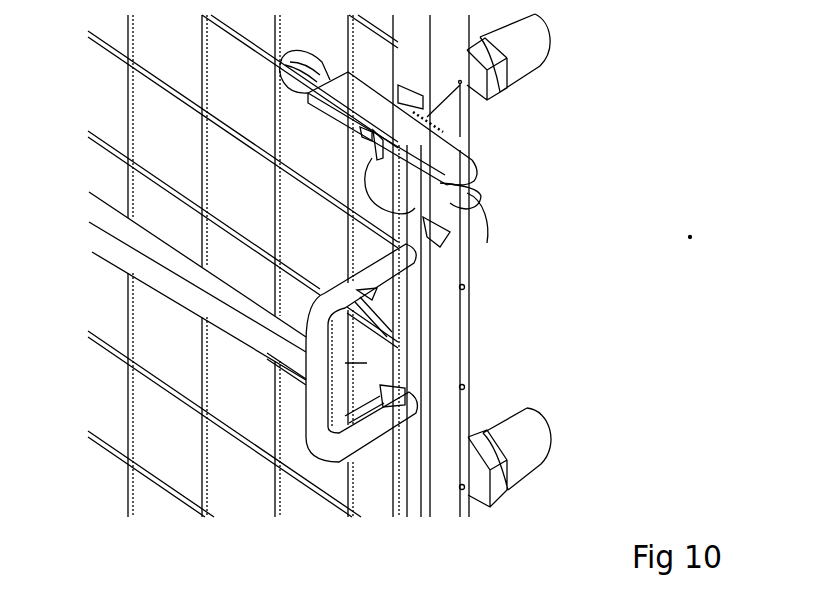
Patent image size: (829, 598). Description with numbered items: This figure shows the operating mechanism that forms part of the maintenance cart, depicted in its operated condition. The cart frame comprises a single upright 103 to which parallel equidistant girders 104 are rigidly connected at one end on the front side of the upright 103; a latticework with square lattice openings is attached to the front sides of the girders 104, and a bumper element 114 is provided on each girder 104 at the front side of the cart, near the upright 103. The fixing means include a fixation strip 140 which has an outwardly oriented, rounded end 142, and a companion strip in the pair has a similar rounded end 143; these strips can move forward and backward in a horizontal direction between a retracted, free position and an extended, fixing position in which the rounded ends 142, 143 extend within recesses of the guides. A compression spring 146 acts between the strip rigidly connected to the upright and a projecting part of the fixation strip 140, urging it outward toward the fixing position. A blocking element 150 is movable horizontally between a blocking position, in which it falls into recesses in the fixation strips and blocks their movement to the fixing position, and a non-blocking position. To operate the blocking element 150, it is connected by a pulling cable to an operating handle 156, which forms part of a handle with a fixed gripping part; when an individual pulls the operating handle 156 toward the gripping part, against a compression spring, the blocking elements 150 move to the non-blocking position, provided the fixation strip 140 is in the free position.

The upright 103 is at (509, 362).
The girder 104 is at (114, 268).
The bumper element 114 is at (522, 55).
The fixation strip 140 is at (432, 155).
The rounded end 142 is at (473, 173).
The rounded end 143 is at (487, 243).
The compression spring 146 is at (433, 125).
The blocking element 150 is at (335, 195).
The operating handle 156 is at (375, 362).